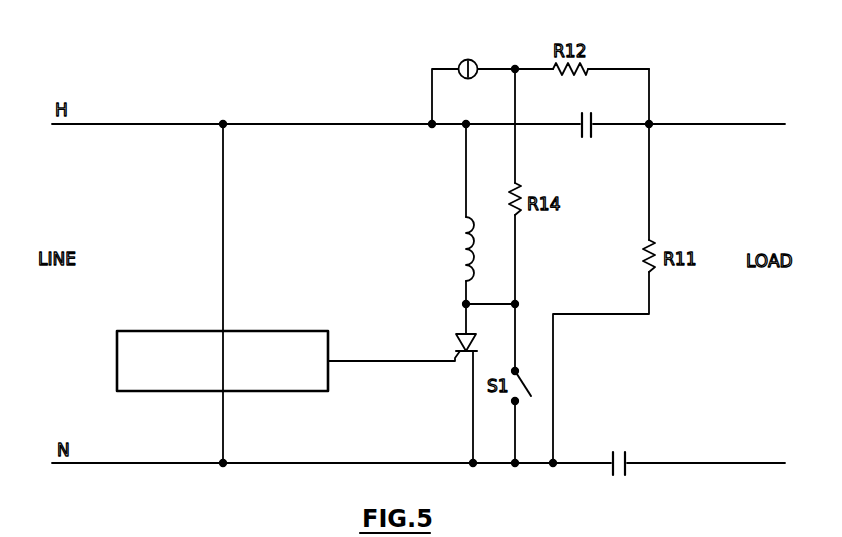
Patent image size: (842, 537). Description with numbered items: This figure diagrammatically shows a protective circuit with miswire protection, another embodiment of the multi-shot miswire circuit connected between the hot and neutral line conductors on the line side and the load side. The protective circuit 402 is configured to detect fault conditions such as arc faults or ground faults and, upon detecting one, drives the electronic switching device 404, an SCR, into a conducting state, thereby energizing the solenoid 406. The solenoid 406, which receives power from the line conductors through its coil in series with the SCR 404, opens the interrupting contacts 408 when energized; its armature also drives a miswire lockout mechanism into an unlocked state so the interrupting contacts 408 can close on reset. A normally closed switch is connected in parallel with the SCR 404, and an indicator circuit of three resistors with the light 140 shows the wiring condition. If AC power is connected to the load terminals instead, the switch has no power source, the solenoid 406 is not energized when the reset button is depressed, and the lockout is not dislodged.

The light 140 is at (475, 61).
The protective circuit 402 is at (153, 331).
The electronic switching device (SCR) 404 is at (456, 343).
The solenoid 406 is at (466, 217).
The interrupting contacts 408 is at (592, 112).